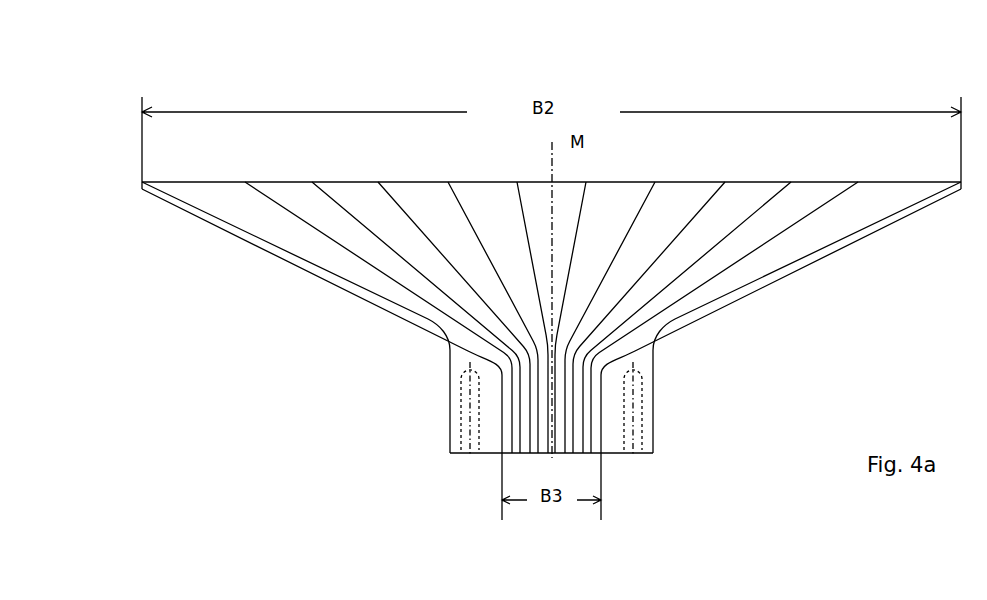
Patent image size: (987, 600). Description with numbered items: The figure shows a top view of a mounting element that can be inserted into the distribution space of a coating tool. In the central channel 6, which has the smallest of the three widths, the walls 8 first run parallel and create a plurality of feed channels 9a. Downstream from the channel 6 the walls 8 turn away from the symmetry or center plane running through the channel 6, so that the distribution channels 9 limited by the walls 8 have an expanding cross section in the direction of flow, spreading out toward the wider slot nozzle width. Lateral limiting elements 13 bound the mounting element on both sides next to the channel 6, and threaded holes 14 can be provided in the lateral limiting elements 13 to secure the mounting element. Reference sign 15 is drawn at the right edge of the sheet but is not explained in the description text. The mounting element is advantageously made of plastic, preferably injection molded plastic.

The channel 6 is at (530, 403).
The walls 8 is at (713, 186).
The distribution channels 9 is at (667, 202).
The feed channels 9a is at (585, 410).
The lateral limiting elements 13 is at (643, 357).
The threaded holes 14 is at (642, 425).
The funnel wall 15 is at (788, 252).